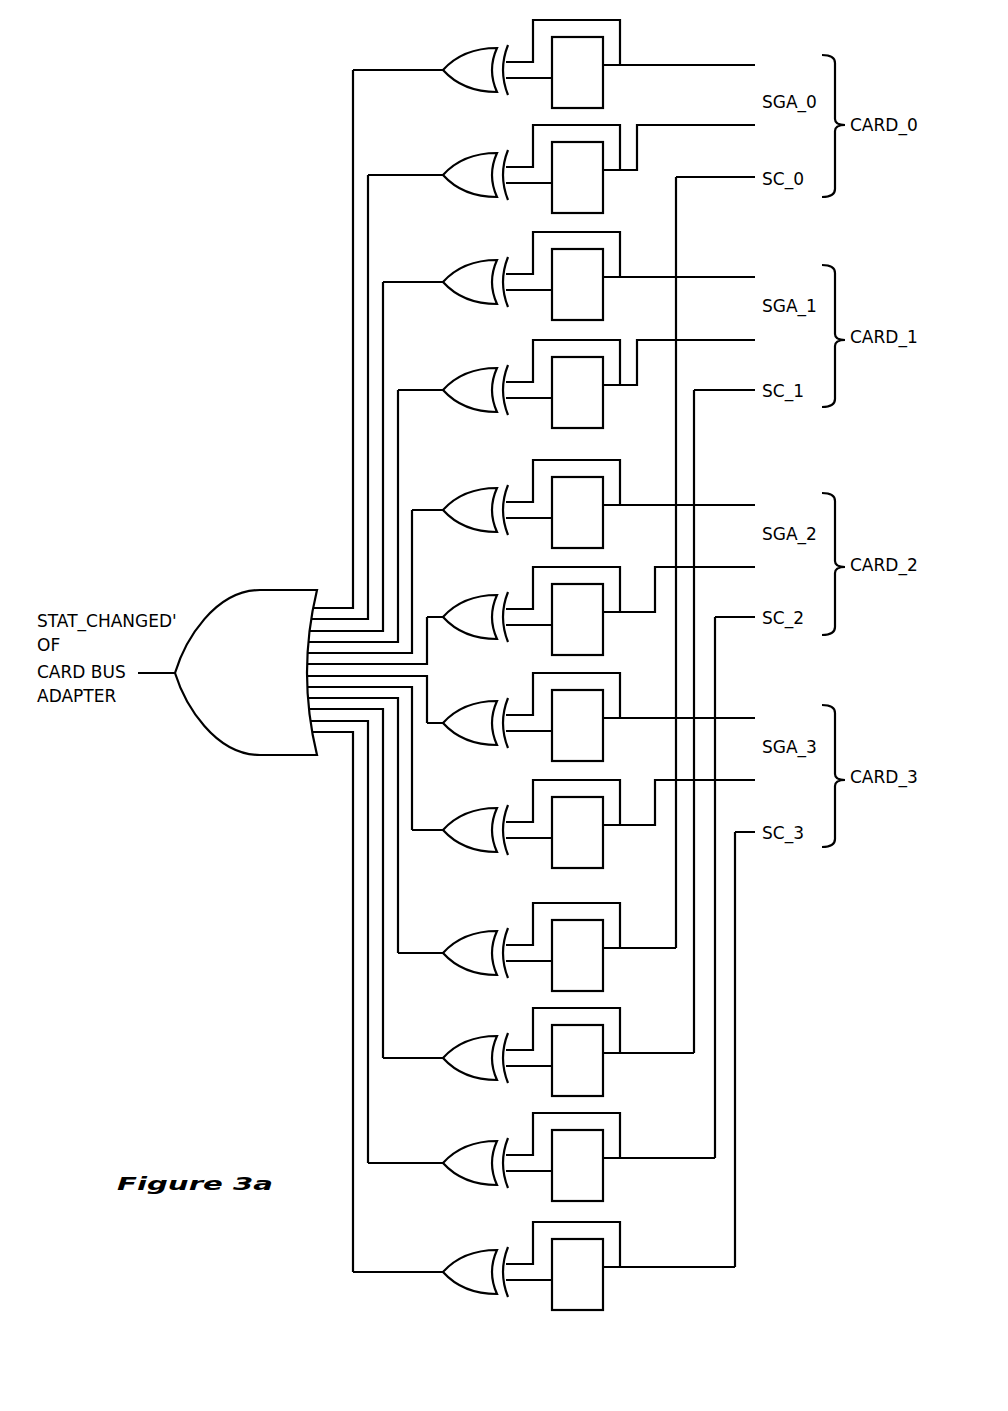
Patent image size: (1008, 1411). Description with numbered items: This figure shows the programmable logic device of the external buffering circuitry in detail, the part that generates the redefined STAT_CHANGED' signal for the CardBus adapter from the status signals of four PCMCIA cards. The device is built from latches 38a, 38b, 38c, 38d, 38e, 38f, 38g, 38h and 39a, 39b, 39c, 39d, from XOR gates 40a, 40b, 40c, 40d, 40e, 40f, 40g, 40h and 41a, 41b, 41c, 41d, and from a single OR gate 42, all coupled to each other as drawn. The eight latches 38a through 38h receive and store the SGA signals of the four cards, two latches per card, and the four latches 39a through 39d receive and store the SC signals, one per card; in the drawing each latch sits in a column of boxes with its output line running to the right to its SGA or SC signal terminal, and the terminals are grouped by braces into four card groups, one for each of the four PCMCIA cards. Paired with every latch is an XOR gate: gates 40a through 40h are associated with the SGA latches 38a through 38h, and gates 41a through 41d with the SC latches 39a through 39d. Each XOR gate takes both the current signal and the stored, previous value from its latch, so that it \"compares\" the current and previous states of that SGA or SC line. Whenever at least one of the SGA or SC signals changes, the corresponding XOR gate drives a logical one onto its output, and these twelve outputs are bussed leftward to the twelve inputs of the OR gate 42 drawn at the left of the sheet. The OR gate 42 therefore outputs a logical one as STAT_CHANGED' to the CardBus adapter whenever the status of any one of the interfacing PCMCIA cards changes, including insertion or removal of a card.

The latch 38a is at (630, 64).
The latch 38b is at (630, 169).
The latch 38c is at (630, 276).
The latch 38d is at (630, 384).
The latch 38e is at (630, 504).
The latch 38f is at (630, 611).
The latch 38g is at (630, 717).
The latch 38h is at (630, 824).
The latch 39a is at (591, 947).
The latch 39b is at (600, 1052).
The latch 39c is at (610, 1157).
The latch 39d is at (620, 1266).
The XOR gate 40a is at (470, 88).
The XOR gate 40b is at (470, 193).
The XOR gate 40c is at (470, 300).
The XOR gate 40d is at (470, 408).
The XOR gate 40e is at (470, 528).
The XOR gate 40f is at (470, 635).
The XOR gate 40g is at (470, 741).
The XOR gate 40h is at (470, 848).
The XOR gate 41a is at (470, 971).
The XOR gate 41b is at (470, 1076).
The XOR gate 41c is at (470, 1181).
The XOR gate 41d is at (470, 1290).
The OR gate 42 is at (262, 740).